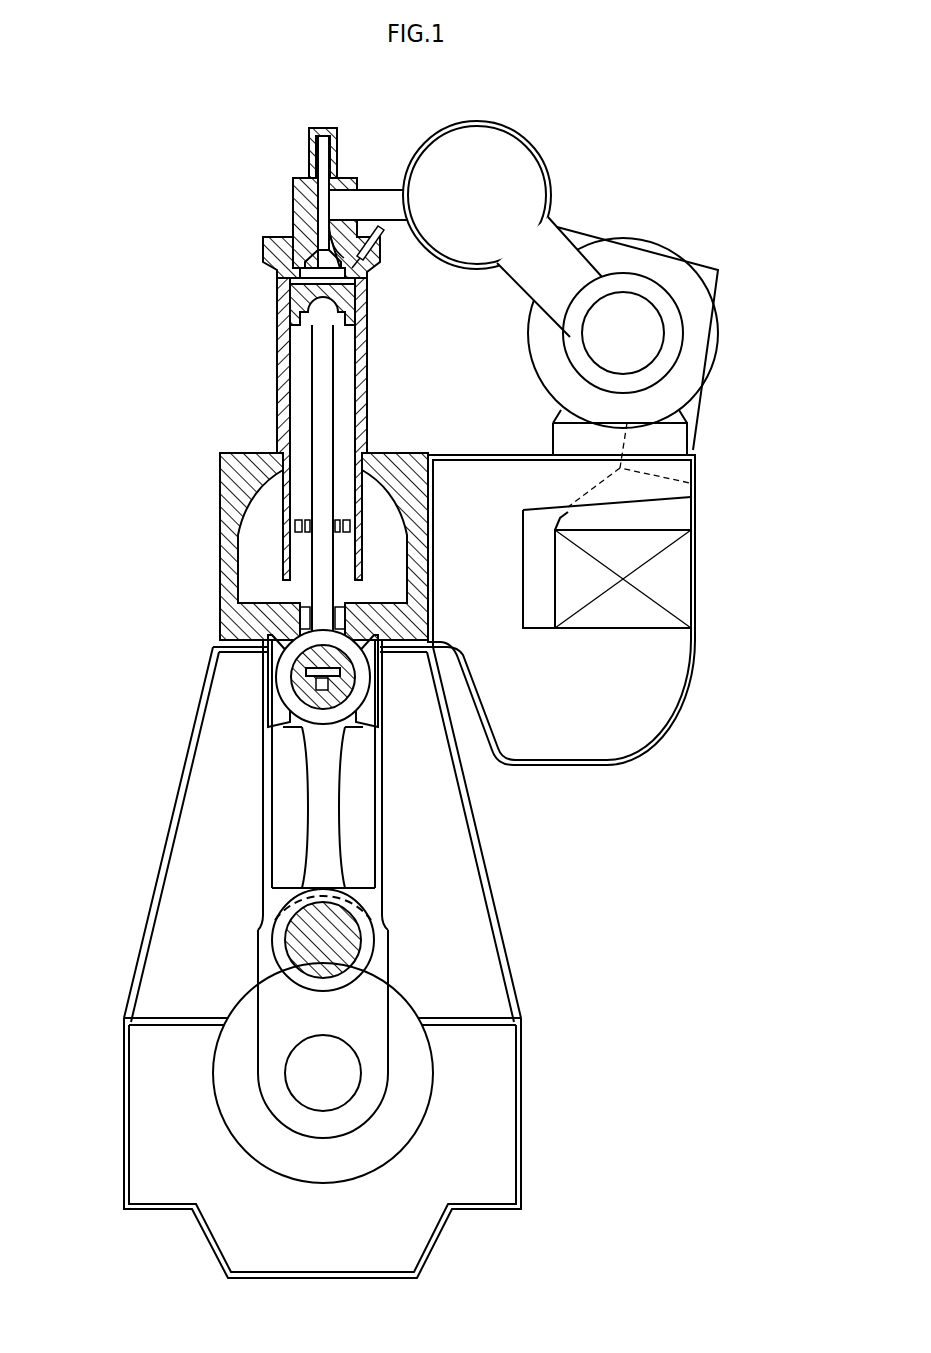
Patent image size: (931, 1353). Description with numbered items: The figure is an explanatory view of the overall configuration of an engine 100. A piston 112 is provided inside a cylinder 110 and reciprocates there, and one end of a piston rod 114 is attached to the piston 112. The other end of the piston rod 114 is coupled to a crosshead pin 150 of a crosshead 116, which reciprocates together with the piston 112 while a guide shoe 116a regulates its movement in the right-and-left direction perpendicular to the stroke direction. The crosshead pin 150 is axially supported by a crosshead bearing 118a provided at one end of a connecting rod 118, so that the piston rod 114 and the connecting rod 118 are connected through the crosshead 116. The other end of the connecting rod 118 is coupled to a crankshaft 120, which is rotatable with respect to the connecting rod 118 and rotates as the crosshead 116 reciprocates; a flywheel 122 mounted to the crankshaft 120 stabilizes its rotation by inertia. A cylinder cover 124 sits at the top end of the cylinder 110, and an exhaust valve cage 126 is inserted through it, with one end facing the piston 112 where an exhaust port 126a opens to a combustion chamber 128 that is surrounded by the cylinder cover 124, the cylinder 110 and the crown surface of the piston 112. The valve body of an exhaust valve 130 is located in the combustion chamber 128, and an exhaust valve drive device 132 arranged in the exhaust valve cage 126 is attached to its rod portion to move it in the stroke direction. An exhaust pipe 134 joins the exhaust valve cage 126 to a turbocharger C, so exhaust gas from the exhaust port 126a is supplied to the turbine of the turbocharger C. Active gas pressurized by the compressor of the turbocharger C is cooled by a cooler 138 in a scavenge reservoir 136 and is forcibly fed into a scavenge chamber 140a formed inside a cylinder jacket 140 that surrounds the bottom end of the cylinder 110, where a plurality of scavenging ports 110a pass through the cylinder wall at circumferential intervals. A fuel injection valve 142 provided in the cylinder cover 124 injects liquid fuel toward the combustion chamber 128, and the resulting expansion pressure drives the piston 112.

The engine 100 is at (136, 121).
The cylinder 110 is at (277, 410).
The scavenging port 110a is at (300, 545).
The piston 112 is at (290, 333).
The piston rod 114 is at (308, 360).
The crosshead 116 is at (285, 717).
The guide shoe 116a is at (292, 672).
The connecting rod 118 is at (308, 800).
The crosshead bearing 118a is at (335, 697).
The crankshaft 120 is at (257, 1057).
The flywheel 122 is at (217, 1042).
The cylinder cover 124 is at (265, 240).
The exhaust valve cage 126 is at (293, 203).
The exhaust port 126a is at (343, 240).
The combustion chamber 128 is at (330, 297).
The exhaust valve 130 is at (320, 276).
The exhaust valve drive device 132 is at (323, 153).
The exhaust pipe 134 is at (548, 185).
The scavenge reservoir 136 is at (590, 694).
The cooler 138 is at (695, 578).
The cylinder jacket 140 is at (222, 478).
The scavenge chamber 140a is at (405, 606).
The fuel injection valve 142 is at (378, 230).
The crosshead pin 150 is at (296, 655).
The turbocharger C is at (653, 247).